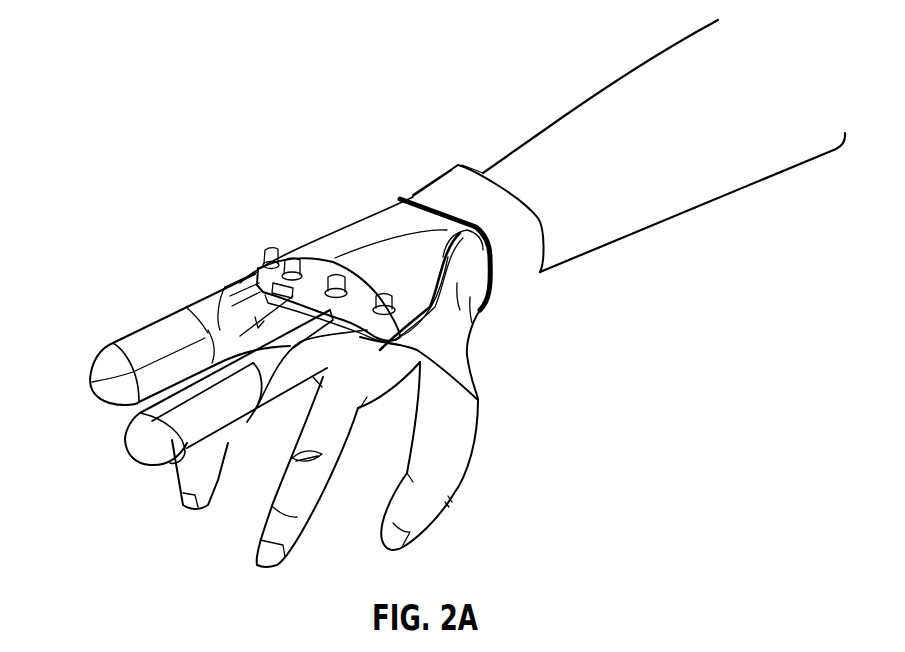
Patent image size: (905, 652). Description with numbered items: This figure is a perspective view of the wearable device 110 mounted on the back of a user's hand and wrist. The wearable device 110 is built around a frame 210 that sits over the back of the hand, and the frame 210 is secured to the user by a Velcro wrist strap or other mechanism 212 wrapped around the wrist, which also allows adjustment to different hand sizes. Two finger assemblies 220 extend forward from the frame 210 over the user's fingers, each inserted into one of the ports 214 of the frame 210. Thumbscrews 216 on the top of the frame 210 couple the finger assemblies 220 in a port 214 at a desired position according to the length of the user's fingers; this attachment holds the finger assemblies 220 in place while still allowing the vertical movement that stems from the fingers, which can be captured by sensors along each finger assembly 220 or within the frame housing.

The wearable device 110 is at (274, 52).
The frame 210 is at (320, 248).
The wrist strap 212 is at (541, 273).
The port 214 is at (479, 401).
The thumbscrew 216 is at (385, 296).
The finger assembly 220 is at (108, 363).